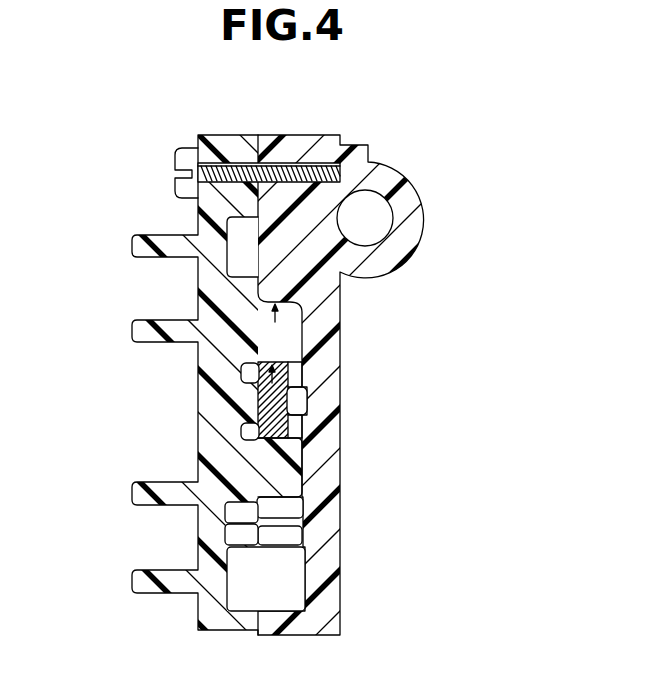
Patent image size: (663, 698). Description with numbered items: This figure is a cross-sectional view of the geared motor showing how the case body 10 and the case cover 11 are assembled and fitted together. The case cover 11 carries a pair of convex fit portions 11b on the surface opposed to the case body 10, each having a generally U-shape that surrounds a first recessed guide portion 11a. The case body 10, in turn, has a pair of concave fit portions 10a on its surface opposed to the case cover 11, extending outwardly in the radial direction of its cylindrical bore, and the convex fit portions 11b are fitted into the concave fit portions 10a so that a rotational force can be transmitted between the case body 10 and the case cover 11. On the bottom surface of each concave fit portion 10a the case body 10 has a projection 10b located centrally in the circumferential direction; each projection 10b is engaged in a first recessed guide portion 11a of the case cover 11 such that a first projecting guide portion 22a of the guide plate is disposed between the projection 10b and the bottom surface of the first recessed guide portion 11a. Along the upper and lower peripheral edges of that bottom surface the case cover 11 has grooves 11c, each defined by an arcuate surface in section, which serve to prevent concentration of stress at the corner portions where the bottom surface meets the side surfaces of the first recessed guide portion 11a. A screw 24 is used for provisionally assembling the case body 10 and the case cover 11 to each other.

The case body 10 is at (308, 632).
The case cover 11 is at (225, 623).
The screw 24 is at (178, 160).
The concave fit portions 10a is at (300, 333).
The projections 10b is at (297, 428).
The first recessed guide portions 11a is at (289, 379).
The convex fit portions 11b is at (285, 353).
The grooves 11c is at (243, 373).
The first projecting guide portions 22a is at (265, 410).